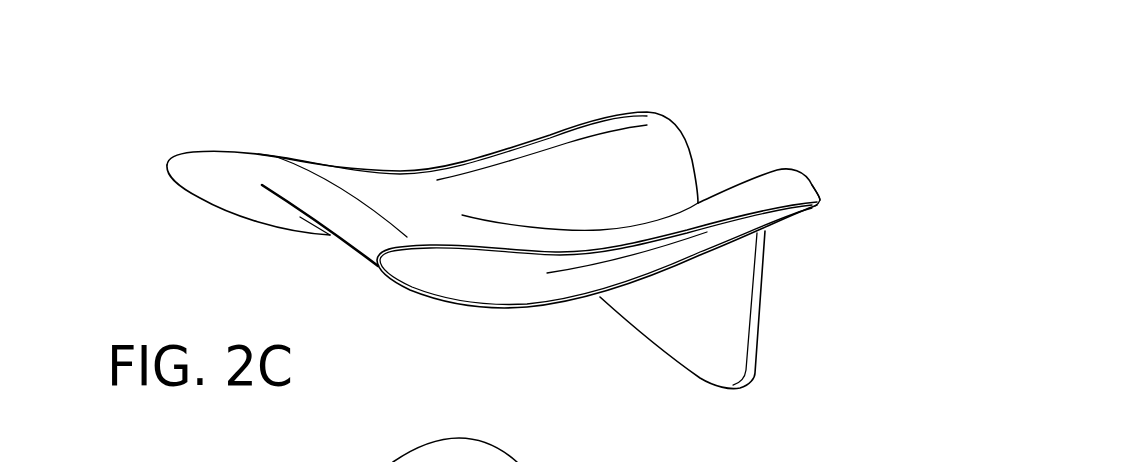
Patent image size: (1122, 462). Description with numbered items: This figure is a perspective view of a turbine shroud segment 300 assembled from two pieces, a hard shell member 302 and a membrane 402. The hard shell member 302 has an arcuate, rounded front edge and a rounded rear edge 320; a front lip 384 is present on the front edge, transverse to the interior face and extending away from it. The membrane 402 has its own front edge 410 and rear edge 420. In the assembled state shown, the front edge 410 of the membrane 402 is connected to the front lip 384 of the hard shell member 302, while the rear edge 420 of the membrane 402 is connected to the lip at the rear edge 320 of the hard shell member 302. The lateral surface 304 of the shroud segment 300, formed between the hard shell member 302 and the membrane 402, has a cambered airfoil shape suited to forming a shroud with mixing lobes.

The shroud segment 300 is at (746, 110).
The hard shell member 302 is at (438, 302).
The lateral surface 304 is at (482, 282).
The rear edge 320 is at (820, 198).
The front lip 384 is at (262, 185).
The membrane 402 is at (612, 160).
The front edge 410 is at (357, 197).
The rear edge 420 is at (777, 170).